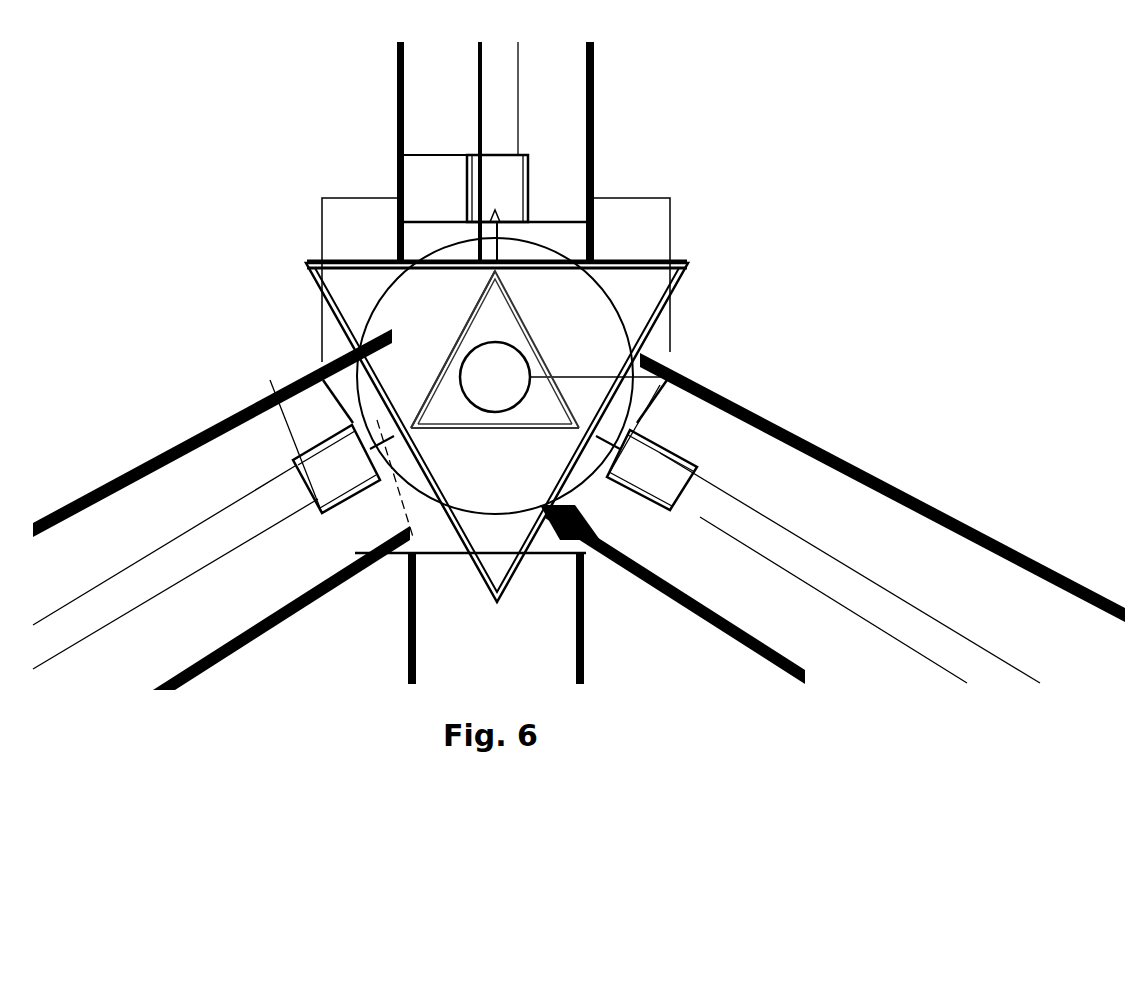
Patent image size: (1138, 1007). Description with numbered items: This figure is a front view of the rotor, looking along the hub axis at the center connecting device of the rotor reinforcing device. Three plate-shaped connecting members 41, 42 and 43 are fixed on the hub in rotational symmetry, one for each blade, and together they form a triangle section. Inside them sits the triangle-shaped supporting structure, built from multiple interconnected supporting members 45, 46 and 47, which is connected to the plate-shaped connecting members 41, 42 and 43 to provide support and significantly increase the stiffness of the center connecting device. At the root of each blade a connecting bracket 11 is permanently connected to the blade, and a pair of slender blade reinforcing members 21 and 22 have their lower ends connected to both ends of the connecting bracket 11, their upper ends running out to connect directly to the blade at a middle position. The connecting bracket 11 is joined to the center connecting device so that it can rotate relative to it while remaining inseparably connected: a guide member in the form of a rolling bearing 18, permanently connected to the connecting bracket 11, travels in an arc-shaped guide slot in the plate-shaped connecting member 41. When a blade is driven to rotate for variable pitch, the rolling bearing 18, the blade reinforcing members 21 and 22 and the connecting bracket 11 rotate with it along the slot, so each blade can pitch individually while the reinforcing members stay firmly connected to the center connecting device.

The connecting bracket 11 is at (527, 190).
The rolling bearing 18 is at (497, 232).
The blade reinforcing member 21 is at (473, 93).
The blade reinforcing member 22 is at (512, 137).
The plate-shaped connecting member 41 is at (687, 264).
The plate-shaped connecting member 42 is at (627, 333).
The plate-shaped connecting member 43 is at (320, 281).
The supporting member 45 is at (533, 332).
The supporting member 46 is at (490, 438).
The supporting member 47 is at (440, 368).